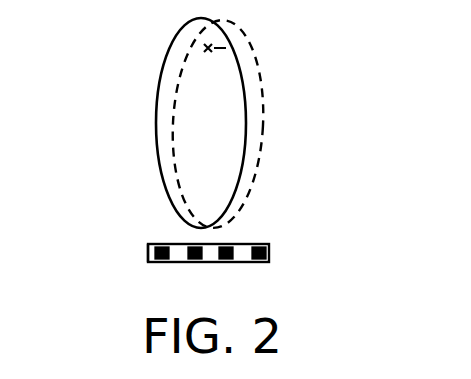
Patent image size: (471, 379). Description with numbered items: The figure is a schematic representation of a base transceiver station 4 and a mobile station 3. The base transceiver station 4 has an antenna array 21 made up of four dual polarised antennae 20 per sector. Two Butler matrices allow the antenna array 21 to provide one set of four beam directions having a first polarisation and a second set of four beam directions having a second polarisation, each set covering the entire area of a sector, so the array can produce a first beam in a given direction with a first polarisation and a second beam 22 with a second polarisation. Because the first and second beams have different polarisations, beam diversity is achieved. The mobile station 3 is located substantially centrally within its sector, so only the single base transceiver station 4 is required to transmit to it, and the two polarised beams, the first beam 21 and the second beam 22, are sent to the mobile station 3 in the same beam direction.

The mobile station 3 is at (236, 46).
The second beam 22 is at (156, 116).
The base transceiver station 4 is at (269, 248).
The antenna array 21 is at (148, 248).
The dual polarised antennae 20 is at (180, 264).